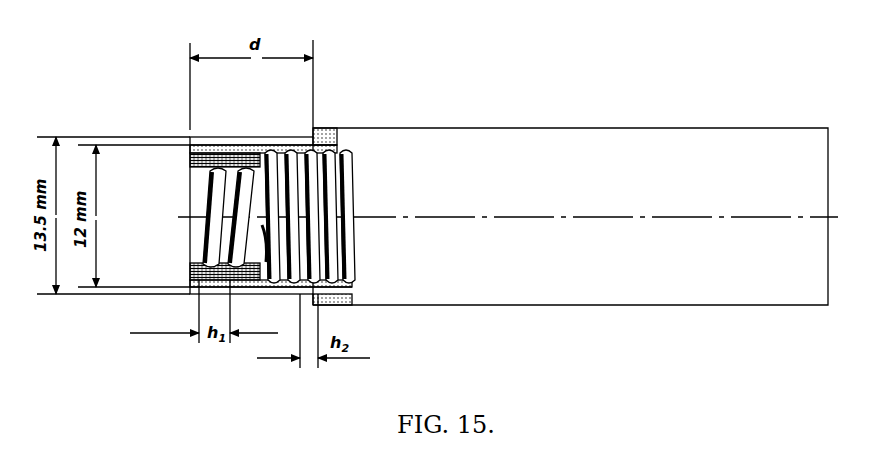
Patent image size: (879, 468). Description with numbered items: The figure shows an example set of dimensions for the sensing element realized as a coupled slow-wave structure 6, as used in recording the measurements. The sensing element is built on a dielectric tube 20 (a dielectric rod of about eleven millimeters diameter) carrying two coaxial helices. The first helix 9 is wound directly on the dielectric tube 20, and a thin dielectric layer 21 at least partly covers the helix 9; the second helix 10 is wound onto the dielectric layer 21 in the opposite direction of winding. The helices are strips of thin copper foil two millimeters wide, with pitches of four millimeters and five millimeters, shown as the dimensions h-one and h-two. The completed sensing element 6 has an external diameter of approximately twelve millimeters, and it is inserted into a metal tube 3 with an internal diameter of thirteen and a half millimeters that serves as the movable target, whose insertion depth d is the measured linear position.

The catheter body / shaft 3 is at (410, 135).
The coupled slow-wave structure 6 is at (176, 124).
The helix 9 is at (252, 148).
The helix 10 is at (276, 148).
The dielectric tube 20 is at (195, 208).
The thin dielectric layer 21 is at (190, 268).